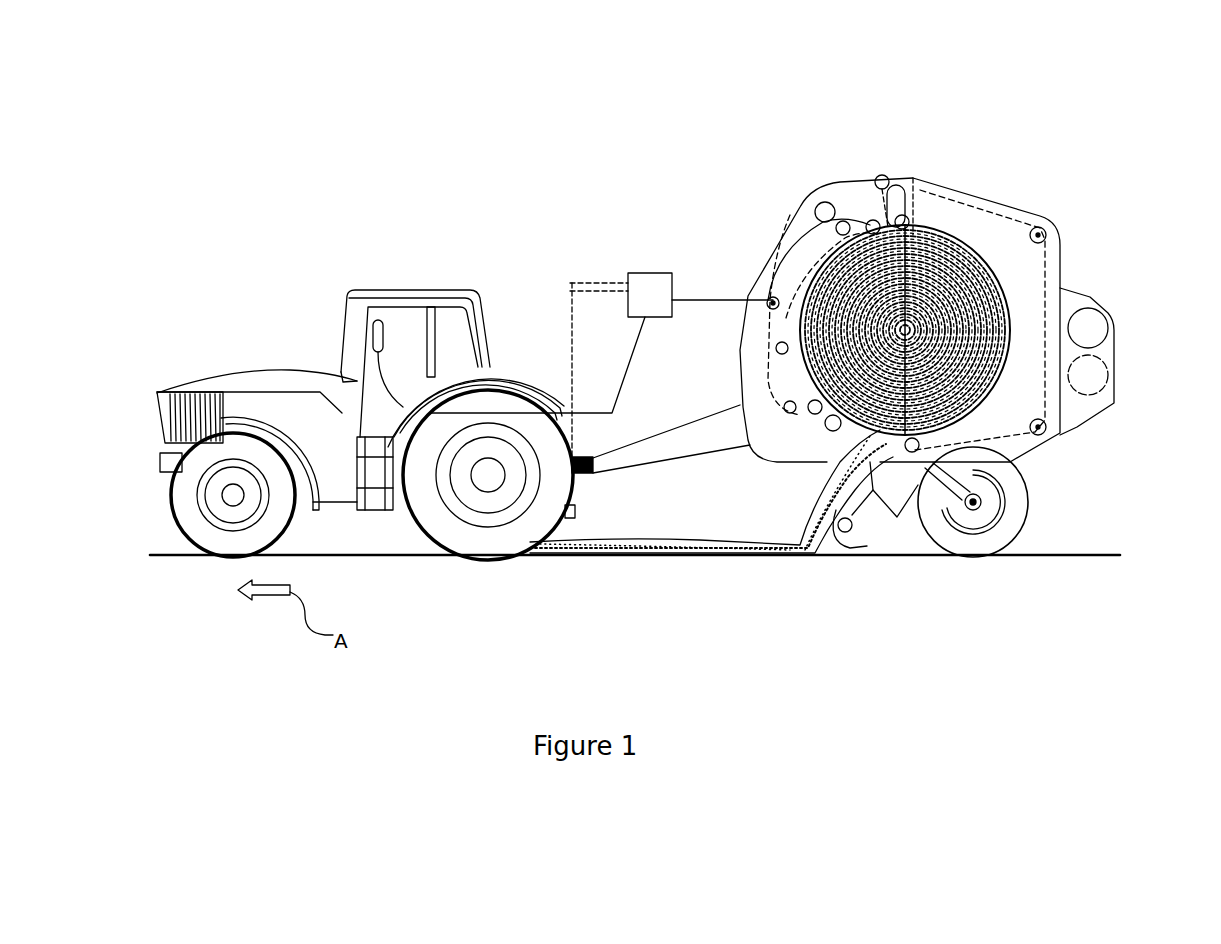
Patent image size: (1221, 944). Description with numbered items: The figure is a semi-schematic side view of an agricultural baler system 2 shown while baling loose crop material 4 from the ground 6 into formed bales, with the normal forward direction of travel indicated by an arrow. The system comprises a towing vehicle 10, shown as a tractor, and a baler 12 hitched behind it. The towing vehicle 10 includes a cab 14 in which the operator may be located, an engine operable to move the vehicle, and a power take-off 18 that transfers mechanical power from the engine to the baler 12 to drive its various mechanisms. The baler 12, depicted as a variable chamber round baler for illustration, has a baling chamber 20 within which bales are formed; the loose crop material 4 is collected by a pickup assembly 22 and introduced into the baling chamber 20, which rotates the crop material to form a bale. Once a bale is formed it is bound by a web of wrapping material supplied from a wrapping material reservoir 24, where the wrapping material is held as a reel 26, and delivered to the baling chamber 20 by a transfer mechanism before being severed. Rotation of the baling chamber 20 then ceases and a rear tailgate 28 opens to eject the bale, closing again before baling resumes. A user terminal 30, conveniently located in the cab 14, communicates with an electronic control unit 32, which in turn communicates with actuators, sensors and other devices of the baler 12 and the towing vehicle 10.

The agricultural baler system 2 is at (607, 223).
The loose crop material 4 is at (677, 535).
The ground 6 is at (918, 557).
The towing vehicle 10 is at (262, 344).
The baler 12 is at (852, 180).
The cab 14 is at (442, 290).
The power take-off (PTO) 18 is at (590, 460).
The baling chamber 20 is at (847, 443).
The pickup assembly 22 is at (868, 545).
The wrapping material reservoir 24 is at (1086, 288).
The reel of wrapping material 26 is at (1095, 375).
The rear tailgate 28 is at (1007, 205).
The user terminal 30 is at (388, 338).
The electronic control unit 32 is at (655, 283).